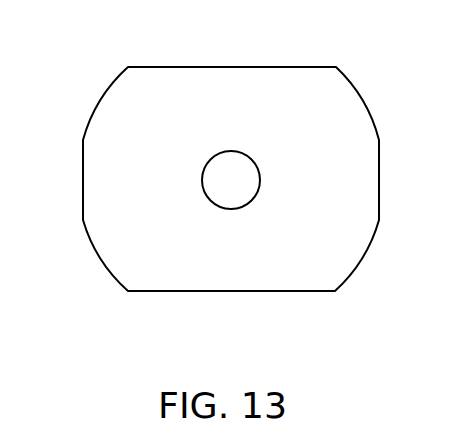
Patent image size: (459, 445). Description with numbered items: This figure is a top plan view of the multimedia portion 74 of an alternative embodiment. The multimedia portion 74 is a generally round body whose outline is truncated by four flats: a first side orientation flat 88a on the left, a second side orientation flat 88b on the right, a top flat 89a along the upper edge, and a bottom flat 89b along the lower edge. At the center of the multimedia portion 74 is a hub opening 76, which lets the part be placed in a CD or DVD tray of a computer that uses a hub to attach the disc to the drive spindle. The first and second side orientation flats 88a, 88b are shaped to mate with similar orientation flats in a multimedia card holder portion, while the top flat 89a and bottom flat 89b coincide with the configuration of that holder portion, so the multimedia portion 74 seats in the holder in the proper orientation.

The multimedia portion 74 is at (102, 263).
The hub opening 76 is at (230, 210).
The first side orientation flat 88a is at (83, 185).
The second side orientation flat 88b is at (379, 175).
The top flat 89a is at (236, 67).
The bottom flat 89b is at (247, 291).